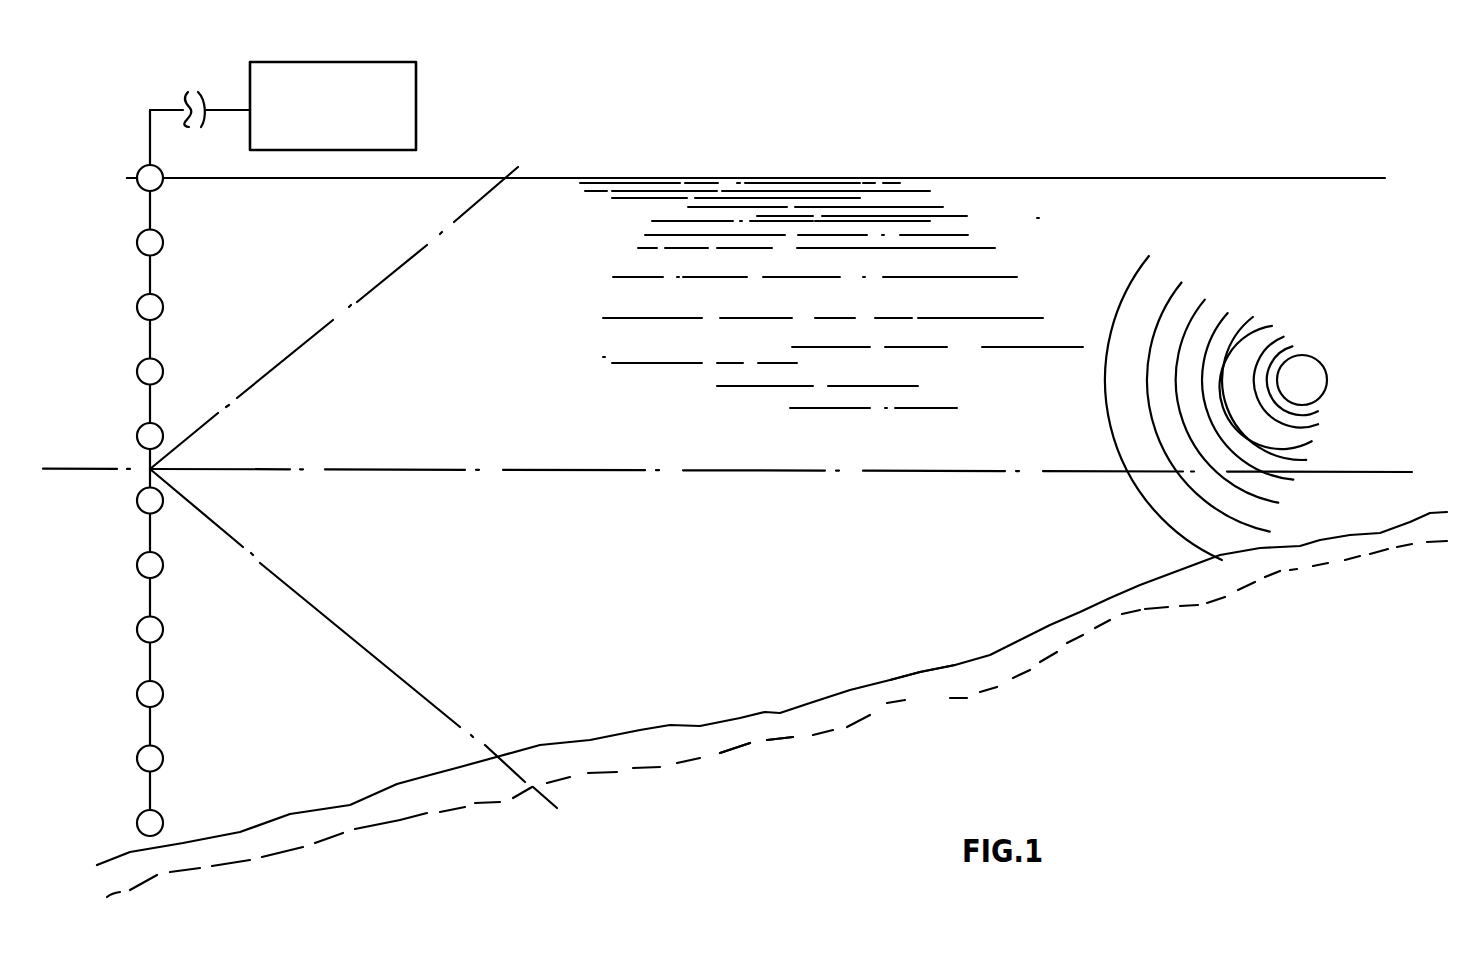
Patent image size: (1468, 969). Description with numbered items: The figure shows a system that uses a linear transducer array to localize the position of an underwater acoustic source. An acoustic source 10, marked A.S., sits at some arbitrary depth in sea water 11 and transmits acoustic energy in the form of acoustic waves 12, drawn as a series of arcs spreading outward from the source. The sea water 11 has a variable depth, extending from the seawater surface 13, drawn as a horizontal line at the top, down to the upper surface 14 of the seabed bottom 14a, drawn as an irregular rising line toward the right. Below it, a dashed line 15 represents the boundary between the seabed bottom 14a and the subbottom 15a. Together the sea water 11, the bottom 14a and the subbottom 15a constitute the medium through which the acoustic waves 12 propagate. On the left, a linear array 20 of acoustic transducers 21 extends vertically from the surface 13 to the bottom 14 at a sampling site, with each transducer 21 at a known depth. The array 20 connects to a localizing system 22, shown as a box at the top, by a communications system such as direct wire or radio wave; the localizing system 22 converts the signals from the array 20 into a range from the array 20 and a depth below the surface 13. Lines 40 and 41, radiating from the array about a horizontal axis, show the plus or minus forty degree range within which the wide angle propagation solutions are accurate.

The acoustic source 10 is at (1327, 387).
The sea water 11 is at (927, 207).
The acoustic waves 12 is at (1122, 295).
The seawater surface 13 is at (612, 178).
The upper surface of seabed bottom 14 is at (820, 693).
The seabed bottom 14a is at (913, 683).
The dashed line 15 is at (748, 743).
The subbottom 15a is at (772, 753).
The linear array 20 is at (153, 281).
The acoustic transducers 21 is at (137, 180).
The localizing system 22 is at (416, 140).
The line 40 is at (333, 321).
The line 41 is at (428, 698).